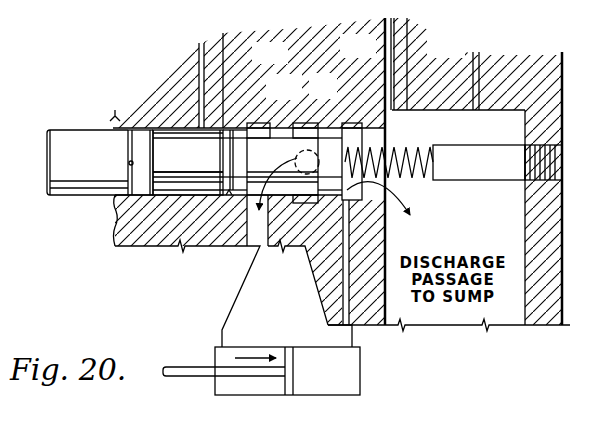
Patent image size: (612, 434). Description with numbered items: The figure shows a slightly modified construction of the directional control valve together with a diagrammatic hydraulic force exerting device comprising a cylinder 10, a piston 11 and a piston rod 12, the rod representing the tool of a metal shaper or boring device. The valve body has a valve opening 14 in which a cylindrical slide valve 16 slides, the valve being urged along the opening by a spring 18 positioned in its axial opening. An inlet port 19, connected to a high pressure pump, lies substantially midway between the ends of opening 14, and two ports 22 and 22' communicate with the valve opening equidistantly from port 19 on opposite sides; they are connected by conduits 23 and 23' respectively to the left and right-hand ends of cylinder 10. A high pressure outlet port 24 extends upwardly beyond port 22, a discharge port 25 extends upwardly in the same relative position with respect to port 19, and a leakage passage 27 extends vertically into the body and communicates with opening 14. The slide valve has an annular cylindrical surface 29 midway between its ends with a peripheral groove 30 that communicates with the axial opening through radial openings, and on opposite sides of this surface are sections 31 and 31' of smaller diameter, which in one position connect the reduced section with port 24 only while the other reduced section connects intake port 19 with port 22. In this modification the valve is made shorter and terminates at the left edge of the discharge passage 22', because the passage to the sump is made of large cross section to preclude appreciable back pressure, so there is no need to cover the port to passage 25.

The cylinder 10 is at (332, 397).
The piston 11 is at (292, 377).
The piston rod 12 is at (187, 373).
The valve opening 14 is at (167, 130).
The cylindrical slide valve 16 is at (73, 136).
The spring 18 is at (418, 148).
The inlet port 19 is at (308, 150).
The port 22 is at (245, 235).
The port 22' is at (342, 224).
The conduit 23 is at (259, 293).
The conduit 23' is at (369, 342).
The high pressure outlet port 24 is at (212, 66).
The discharge port 25 is at (398, 66).
The leakage passage 27 is at (478, 88).
The annular cylindrical surface 29 is at (226, 192).
The peripheral groove 30 is at (232, 152).
The section of smaller diameter 31 is at (180, 228).
The section of smaller diameter 31' is at (294, 143).